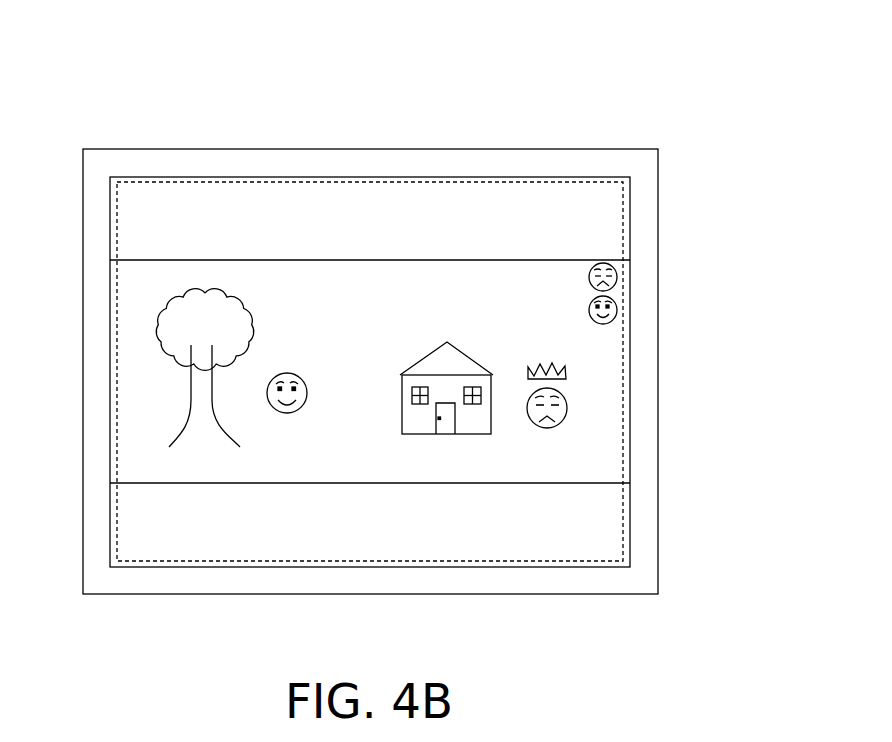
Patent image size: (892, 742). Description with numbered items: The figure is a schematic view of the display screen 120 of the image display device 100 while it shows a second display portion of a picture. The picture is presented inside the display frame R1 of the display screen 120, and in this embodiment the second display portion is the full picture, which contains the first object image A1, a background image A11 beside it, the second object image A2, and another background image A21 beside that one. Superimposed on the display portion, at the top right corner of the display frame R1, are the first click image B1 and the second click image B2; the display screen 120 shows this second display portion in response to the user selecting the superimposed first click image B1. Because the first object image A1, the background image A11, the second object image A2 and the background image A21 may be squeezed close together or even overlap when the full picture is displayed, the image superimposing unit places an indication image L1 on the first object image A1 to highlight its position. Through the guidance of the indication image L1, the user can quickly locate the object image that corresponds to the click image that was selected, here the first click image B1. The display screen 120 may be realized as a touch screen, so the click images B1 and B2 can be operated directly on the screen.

The image display device 100 is at (186, 108).
The display screen 120 is at (110, 312).
The display frame R1 is at (117, 447).
The background image A21 is at (200, 420).
The second object image A2 is at (283, 413).
The background image A11 is at (478, 427).
The first object image A1 is at (628, 510).
The indication image L1 is at (566, 372).
The first click image B1 is at (618, 275).
The second click image B2 is at (618, 308).